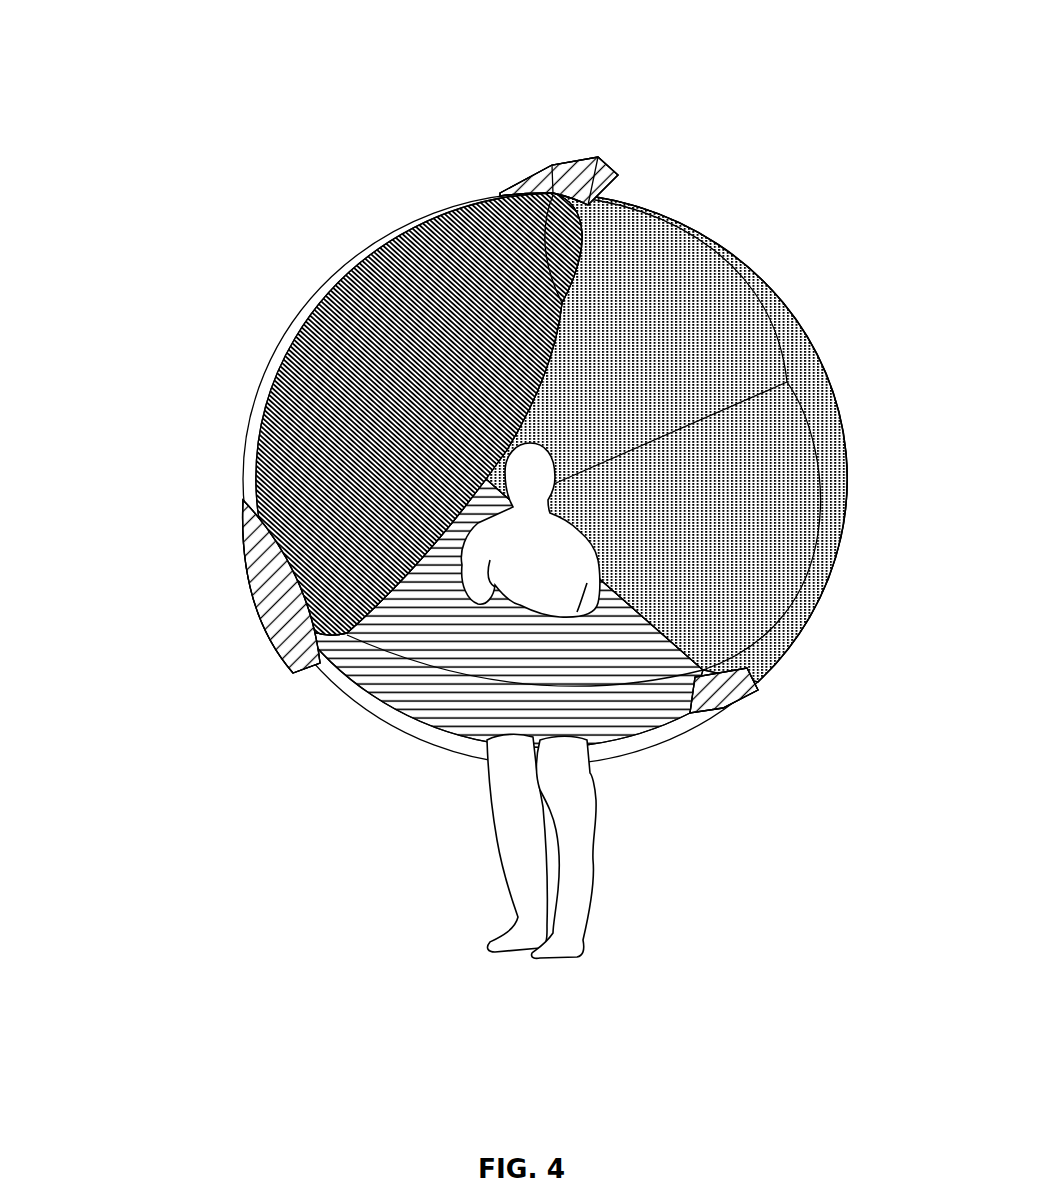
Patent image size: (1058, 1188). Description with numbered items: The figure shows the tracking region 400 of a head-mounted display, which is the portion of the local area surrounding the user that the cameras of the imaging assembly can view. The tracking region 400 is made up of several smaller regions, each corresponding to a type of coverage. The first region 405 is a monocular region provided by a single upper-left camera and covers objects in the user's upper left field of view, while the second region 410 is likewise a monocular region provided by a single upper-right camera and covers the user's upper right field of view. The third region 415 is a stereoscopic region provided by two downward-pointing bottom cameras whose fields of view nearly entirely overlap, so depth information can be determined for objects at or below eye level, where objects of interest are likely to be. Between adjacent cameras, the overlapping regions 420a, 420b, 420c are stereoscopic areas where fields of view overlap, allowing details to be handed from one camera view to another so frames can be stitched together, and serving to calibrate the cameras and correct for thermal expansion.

The tracking region 400 is at (177, 61).
The first region 405 is at (353, 330).
The second region 410 is at (695, 298).
The third region 415 is at (415, 705).
The overlapping region 420a is at (571, 158).
The overlapping region 420b is at (240, 537).
The overlapping region 420c is at (882, 806).